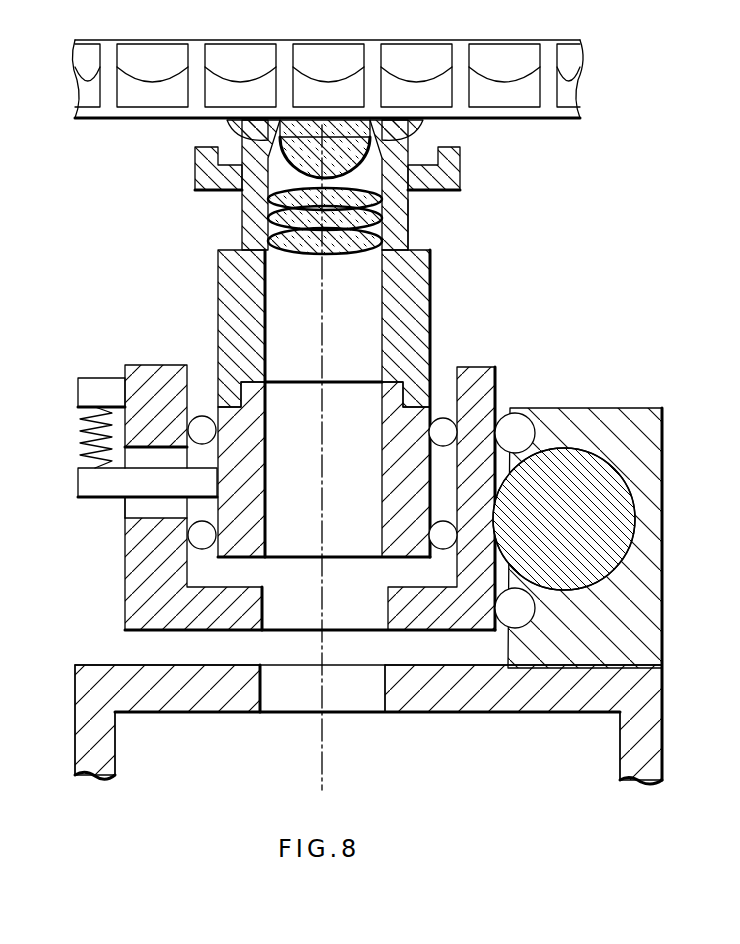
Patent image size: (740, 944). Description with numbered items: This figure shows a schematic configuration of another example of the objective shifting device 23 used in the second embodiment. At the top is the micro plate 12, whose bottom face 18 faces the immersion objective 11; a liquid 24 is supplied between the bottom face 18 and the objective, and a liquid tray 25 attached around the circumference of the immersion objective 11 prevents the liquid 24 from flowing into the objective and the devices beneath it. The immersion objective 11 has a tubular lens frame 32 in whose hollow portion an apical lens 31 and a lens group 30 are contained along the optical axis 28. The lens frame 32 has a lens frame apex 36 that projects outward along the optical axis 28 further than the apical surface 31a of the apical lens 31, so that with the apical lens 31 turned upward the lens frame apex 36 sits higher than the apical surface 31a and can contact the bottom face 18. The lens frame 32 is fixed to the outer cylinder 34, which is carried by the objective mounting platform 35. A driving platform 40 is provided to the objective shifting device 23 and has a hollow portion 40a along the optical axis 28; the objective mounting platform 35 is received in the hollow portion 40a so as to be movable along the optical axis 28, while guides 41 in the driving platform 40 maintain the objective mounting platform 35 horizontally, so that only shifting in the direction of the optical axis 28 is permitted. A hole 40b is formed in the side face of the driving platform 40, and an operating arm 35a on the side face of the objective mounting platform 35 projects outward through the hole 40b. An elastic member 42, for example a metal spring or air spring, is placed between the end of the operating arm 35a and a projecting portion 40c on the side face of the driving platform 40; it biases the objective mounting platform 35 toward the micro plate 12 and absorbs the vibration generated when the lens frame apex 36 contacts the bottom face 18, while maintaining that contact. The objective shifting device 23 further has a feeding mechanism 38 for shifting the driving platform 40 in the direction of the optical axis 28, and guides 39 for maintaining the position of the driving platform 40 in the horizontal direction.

The immersion objective 11 is at (122, 252).
The micro plate 12 is at (511, 40).
The bottom face 18 is at (118, 121).
The objective shifting device 23 is at (647, 410).
The liquid 24 is at (231, 126).
The liquid tray 25 is at (196, 183).
The optical axis 28 is at (318, 775).
The lens group 30 is at (268, 216).
The apical lens 31 is at (410, 208).
The apical surface 31a is at (310, 118).
The lens frame 32 is at (410, 237).
The outer cylinder 34 is at (432, 290).
The objective mounting platform 35 is at (433, 412).
The operating arm 35a is at (78, 481).
The lens frame apex 36 is at (383, 120).
The feeding mechanism 38 is at (577, 462).
The guides 39 is at (512, 427).
The driving platform 40 is at (486, 367).
The hollow portion 40a is at (193, 563).
The hole 40b is at (124, 512).
The projecting portion 40c is at (92, 377).
The guides 41 is at (203, 547).
The elastic member 42 is at (78, 440).